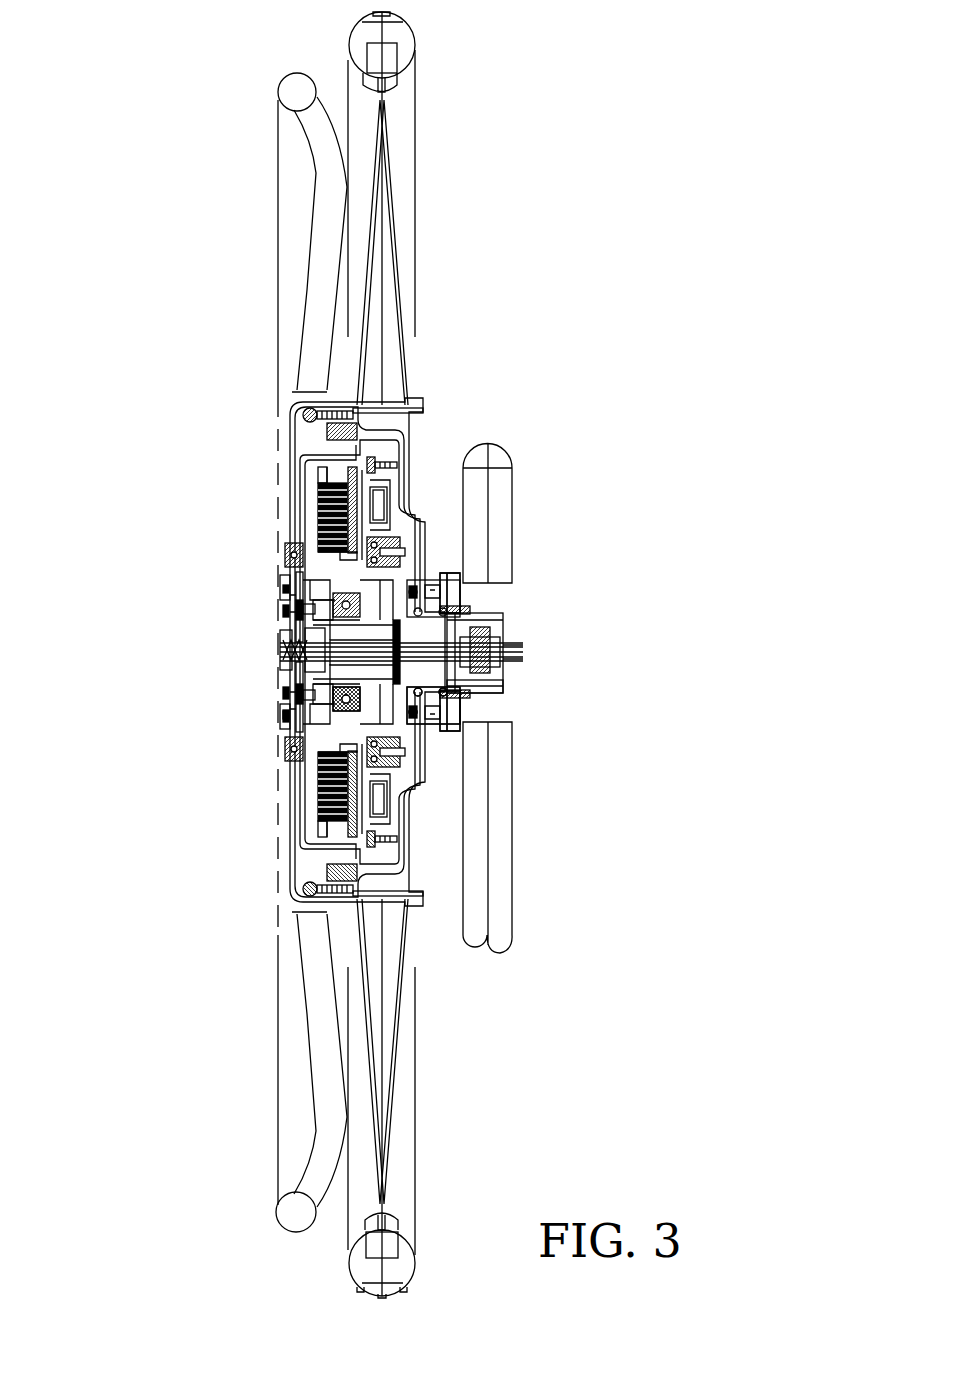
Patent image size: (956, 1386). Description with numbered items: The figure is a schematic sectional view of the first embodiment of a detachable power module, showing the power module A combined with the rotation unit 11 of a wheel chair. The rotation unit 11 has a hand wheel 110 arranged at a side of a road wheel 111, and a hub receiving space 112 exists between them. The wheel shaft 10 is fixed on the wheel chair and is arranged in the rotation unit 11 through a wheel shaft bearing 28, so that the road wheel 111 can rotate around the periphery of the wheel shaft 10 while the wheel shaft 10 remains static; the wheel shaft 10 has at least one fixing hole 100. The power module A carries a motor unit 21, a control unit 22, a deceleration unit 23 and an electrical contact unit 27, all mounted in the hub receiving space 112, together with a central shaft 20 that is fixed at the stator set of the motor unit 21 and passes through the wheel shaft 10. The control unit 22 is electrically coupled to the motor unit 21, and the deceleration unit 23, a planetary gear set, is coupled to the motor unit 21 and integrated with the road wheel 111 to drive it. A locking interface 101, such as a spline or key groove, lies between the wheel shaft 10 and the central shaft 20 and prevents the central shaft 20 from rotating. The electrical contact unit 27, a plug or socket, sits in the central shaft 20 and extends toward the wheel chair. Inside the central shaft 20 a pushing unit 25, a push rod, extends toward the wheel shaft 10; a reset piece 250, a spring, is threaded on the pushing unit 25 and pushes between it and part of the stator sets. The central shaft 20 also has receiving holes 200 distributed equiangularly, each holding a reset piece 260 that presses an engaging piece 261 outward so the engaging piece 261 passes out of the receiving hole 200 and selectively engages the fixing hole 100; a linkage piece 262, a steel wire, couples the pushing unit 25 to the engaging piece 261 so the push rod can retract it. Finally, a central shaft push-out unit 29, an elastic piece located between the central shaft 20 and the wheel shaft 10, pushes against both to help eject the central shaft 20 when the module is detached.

The rotation unit 11 is at (297, 655).
The road wheel 111 is at (350, 33).
The hand wheel 110 is at (278, 91).
The hub receiving space 112 is at (307, 442).
The deceleration unit 23 is at (380, 508).
The motor unit 21 is at (340, 800).
The wheel shaft 10 is at (483, 623).
The electrical contact unit 27 is at (508, 640).
The locking interface 101 is at (467, 612).
The wheel shaft bearing 28 is at (424, 602).
The central shaft push-out unit 29 is at (503, 684).
The central shaft 20 is at (474, 688).
The receiving hole 200 is at (449, 716).
The fixing hole 100 is at (432, 746).
The power module A is at (280, 546).
The engaging piece 261 is at (296, 748).
The control unit 22 is at (300, 608).
The reset piece 250 is at (283, 648).
The pushing unit 25 is at (330, 658).
The reset piece 260 is at (390, 676).
The linkage piece 262 is at (345, 696).